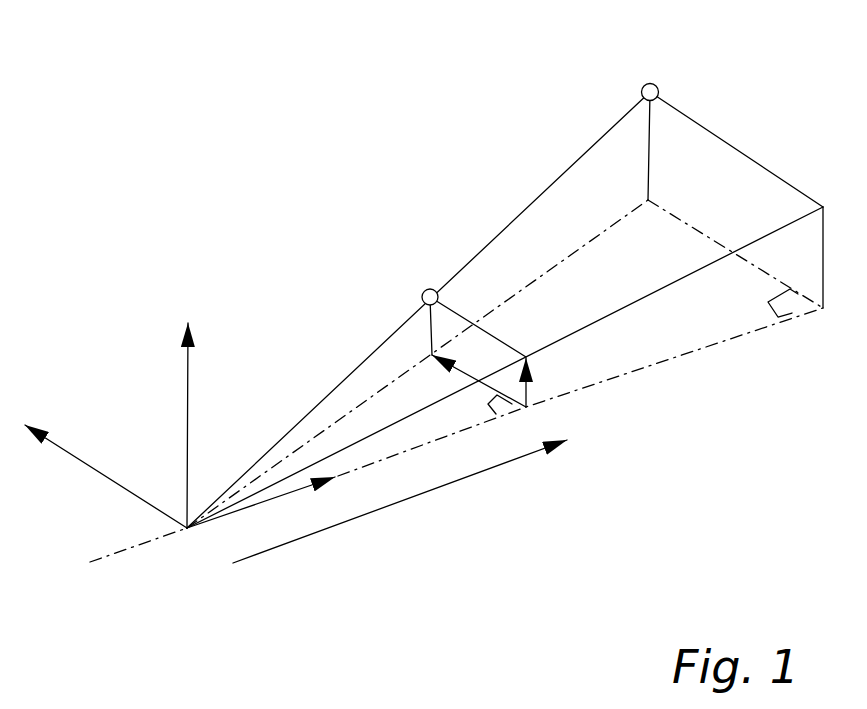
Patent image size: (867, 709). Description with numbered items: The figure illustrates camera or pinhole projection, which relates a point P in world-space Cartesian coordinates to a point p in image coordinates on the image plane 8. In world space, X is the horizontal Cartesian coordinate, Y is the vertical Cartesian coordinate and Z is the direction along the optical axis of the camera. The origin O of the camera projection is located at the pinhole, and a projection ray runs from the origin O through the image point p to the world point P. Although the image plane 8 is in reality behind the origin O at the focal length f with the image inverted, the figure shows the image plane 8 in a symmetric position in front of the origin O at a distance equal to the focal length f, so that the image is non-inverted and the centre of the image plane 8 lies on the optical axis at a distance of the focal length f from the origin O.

The image plane 8 is at (488, 331).
The point P(X,Y,Z) in world space P is at (640, 91).
The point p(x,y) in image coordinates p is at (421, 288).
The origin of camera projection O is at (189, 437).
The focal length f is at (406, 492).